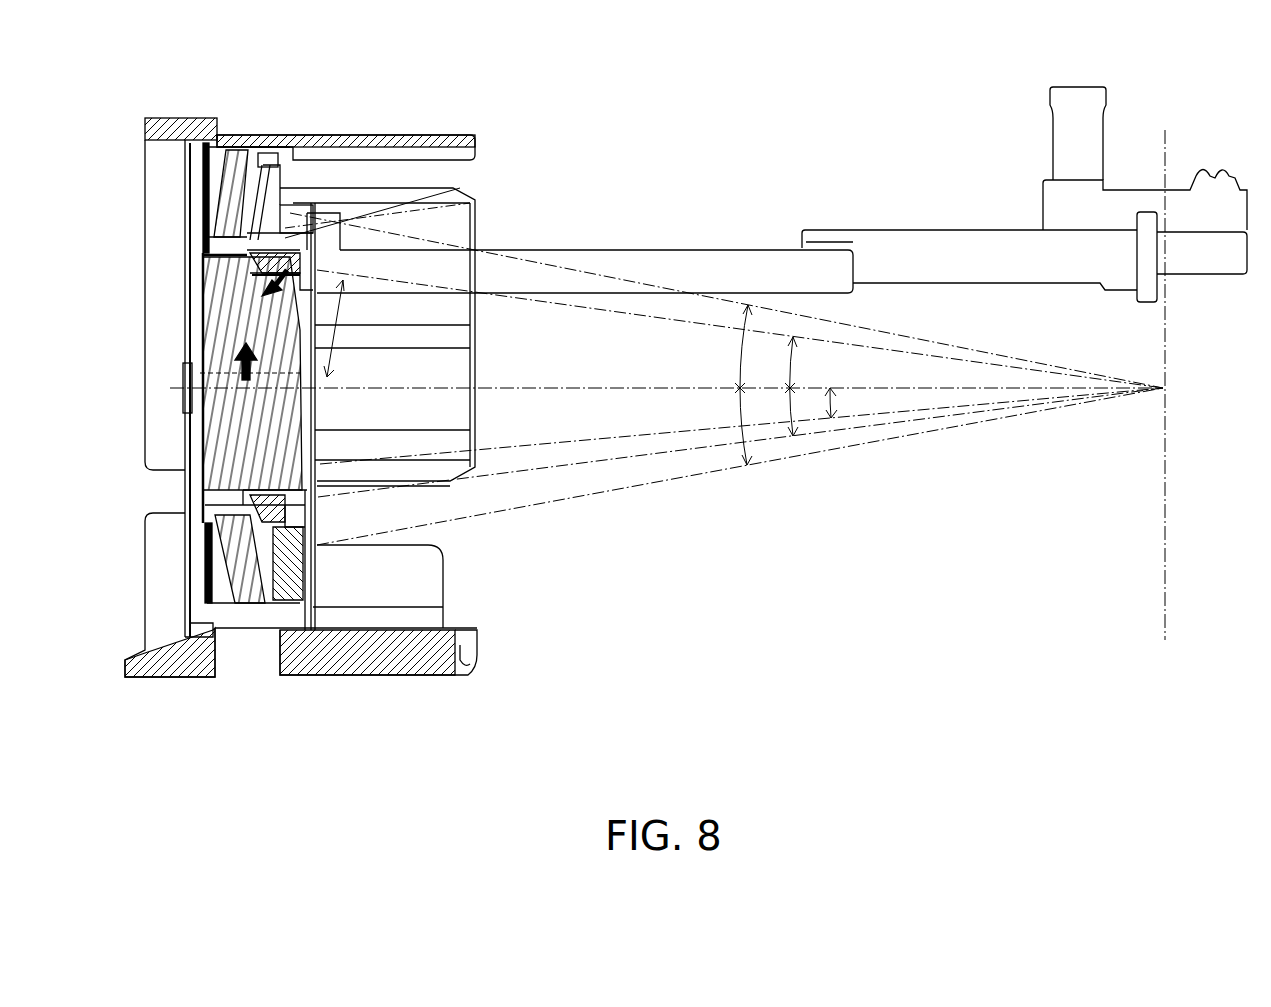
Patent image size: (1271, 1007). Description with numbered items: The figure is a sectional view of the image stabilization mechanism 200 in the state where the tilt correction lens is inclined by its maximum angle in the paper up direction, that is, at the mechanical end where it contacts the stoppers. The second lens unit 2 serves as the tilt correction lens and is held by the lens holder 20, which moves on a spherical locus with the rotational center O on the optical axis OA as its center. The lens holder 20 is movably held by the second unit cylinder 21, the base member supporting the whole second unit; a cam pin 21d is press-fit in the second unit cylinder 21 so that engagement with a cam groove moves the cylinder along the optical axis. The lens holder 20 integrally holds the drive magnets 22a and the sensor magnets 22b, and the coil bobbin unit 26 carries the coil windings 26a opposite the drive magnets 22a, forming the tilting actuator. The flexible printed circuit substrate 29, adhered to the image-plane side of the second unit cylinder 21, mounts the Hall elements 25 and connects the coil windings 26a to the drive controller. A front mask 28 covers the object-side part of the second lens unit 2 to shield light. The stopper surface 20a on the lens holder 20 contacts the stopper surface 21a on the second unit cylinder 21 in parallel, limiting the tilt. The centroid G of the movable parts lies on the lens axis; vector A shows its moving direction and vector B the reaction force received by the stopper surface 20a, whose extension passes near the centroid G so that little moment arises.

The image stabilization mechanism 200 is at (1252, 91).
The lens holder 20 is at (202, 242).
The stopper surface 20a is at (296, 246).
The second unit cylinder 21 is at (410, 673).
The stopper surface 21a is at (456, 193).
The cam pin 21d is at (462, 682).
The second lens unit 2 is at (208, 287).
The drive magnet 22a is at (243, 620).
The sensor magnet 22b is at (232, 150).
The Hall element 25 is at (247, 165).
The coil bobbin unit 26 is at (297, 595).
The coil winding 26a is at (257, 608).
The front mask 28 is at (193, 152).
The flexible printed circuit substrate 29 is at (775, 248).
The vector A is at (235, 354).
The vector B is at (276, 292).
The centroid G is at (240, 362).
The rotational center O is at (740, 379).
The optical axis OA is at (592, 392).